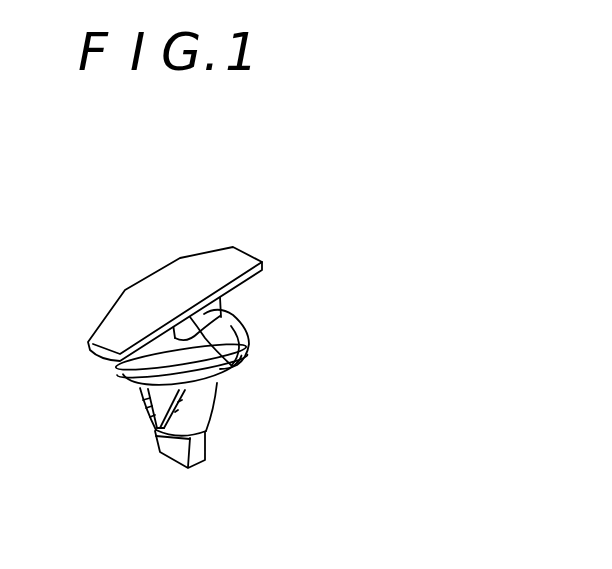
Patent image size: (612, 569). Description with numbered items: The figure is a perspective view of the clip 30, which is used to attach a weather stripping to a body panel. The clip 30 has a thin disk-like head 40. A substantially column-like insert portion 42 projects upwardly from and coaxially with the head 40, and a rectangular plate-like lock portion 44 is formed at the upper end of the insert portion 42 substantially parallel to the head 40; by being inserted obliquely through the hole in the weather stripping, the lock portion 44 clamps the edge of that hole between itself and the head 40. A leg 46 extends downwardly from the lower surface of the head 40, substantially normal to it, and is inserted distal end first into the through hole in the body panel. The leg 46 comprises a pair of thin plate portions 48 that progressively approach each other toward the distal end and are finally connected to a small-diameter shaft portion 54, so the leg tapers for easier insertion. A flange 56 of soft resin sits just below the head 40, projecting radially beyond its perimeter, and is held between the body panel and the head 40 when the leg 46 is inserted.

The clip 30 is at (203, 356).
The head 40 is at (232, 318).
The insert portion 42 is at (202, 366).
The lock portion 44 is at (215, 260).
The leg 46 is at (218, 426).
The plate portions 48 is at (178, 408).
The shaft portion 54 is at (170, 475).
The flange 56 is at (248, 339).